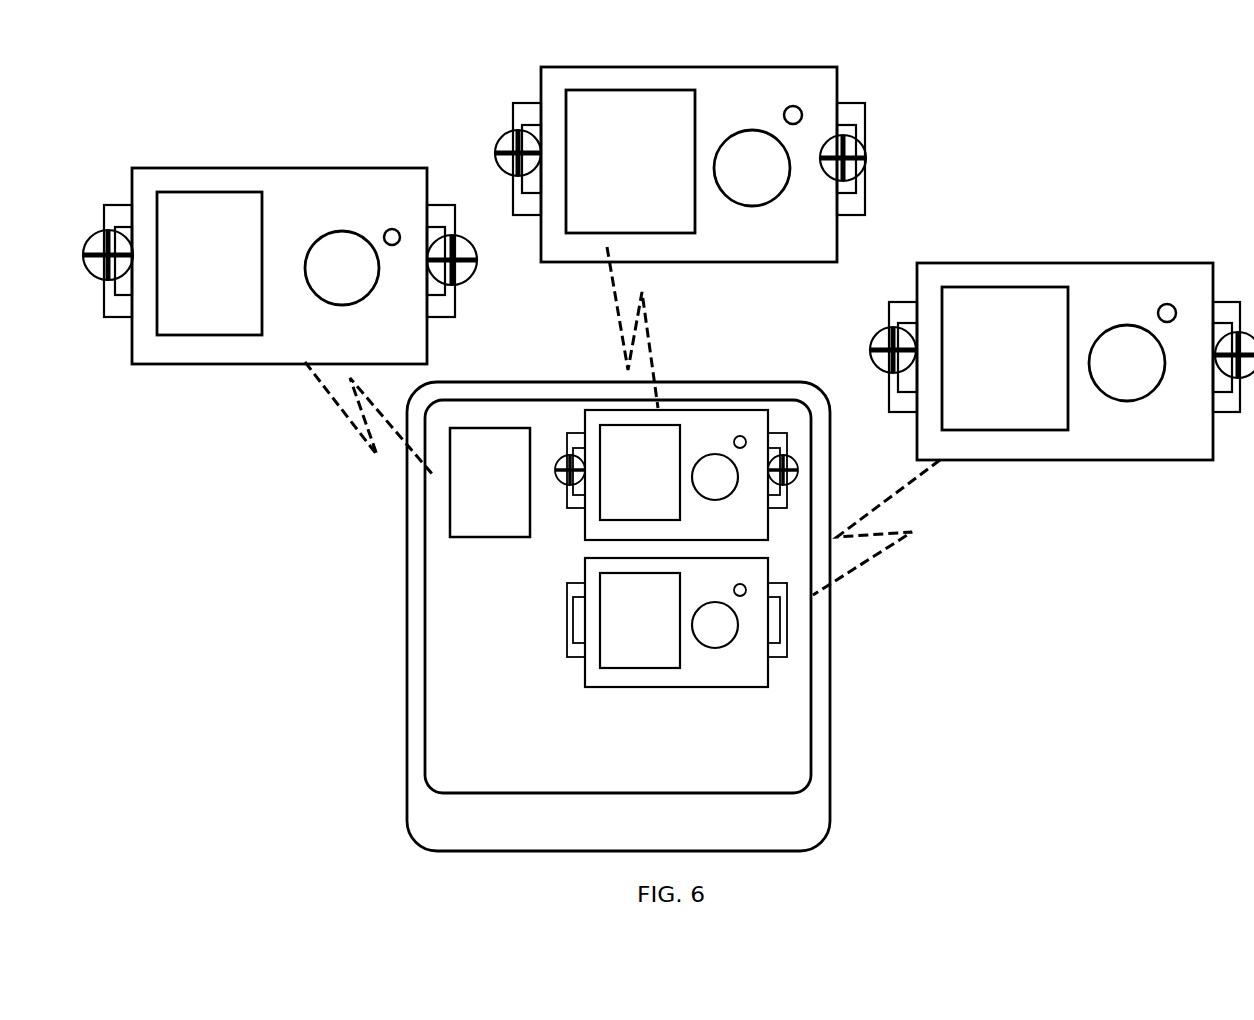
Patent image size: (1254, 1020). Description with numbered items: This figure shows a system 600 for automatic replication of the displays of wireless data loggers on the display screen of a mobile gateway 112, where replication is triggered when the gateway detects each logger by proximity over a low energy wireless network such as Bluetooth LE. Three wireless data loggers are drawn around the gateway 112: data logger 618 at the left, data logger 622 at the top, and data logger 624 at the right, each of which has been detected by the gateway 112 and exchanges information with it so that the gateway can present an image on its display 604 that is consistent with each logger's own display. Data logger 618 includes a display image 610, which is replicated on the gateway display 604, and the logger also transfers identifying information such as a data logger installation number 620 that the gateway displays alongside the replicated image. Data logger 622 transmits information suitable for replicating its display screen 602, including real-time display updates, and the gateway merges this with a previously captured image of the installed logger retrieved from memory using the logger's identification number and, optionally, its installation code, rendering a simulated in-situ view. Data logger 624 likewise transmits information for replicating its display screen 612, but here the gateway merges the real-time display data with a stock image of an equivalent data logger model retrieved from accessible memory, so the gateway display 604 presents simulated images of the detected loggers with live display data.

The system 600 is at (236, 98).
The display screen 602 is at (562, 127).
The gateway display 604 is at (649, 756).
The display image 610 is at (180, 335).
The display screen 612 is at (1005, 432).
The data logger 618 is at (387, 220).
The data logger installation number 620 is at (430, 347).
The data logger 622 is at (837, 99).
The data logger 624 is at (1163, 233).
The gateway 112 is at (685, 835).